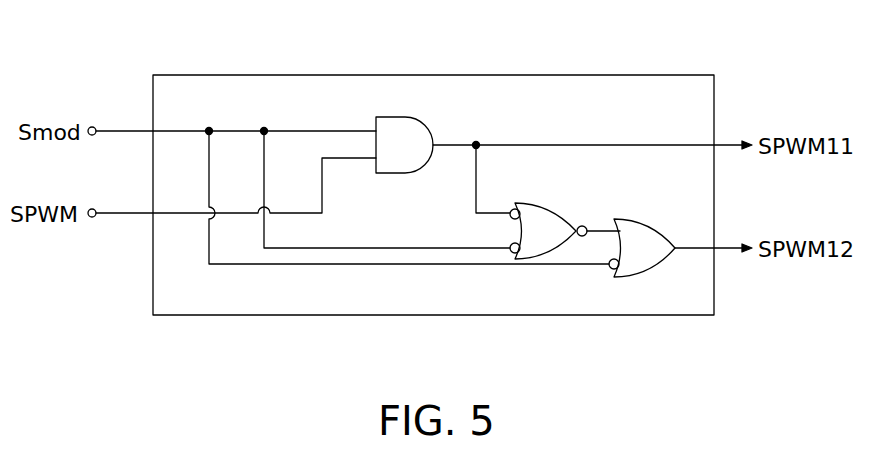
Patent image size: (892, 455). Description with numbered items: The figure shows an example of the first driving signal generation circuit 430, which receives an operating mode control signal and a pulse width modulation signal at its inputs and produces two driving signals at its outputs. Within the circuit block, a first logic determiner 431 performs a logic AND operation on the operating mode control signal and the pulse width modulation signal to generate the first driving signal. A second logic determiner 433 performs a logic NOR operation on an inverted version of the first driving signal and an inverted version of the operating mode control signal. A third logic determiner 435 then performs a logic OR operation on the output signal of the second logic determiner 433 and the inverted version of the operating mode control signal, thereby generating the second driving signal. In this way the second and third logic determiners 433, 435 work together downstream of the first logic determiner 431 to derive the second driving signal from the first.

The first driving signal generation circuit 430 is at (300, 75).
The first logic determiner 431 is at (397, 117).
The second logic determiner 433 is at (549, 258).
The third logic determiner 435 is at (651, 270).